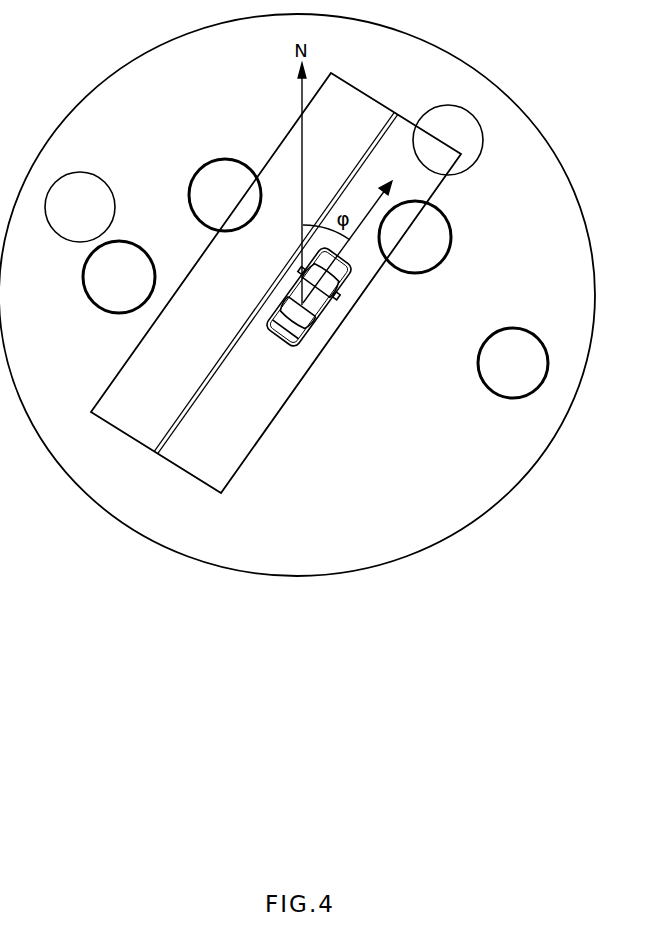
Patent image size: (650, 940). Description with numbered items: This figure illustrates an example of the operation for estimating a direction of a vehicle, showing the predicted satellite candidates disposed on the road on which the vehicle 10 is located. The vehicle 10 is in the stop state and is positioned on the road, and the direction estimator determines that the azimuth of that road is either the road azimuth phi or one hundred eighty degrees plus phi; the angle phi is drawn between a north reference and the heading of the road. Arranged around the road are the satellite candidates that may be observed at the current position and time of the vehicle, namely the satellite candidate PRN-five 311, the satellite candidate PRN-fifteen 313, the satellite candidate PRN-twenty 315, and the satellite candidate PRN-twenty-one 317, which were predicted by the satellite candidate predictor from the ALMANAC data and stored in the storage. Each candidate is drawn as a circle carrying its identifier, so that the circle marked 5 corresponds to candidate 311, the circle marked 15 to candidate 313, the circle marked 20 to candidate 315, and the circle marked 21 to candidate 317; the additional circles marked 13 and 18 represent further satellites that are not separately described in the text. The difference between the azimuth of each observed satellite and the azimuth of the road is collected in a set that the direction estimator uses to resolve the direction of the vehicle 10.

The vehicle 10 is at (322, 318).
The satellite candidate PRN-05 311 is at (513, 336).
The satellite candidate PRN-15 313 is at (225, 169).
The satellite candidate PRN-20 315 is at (452, 237).
The satellite candidate PRN-21 317 is at (85, 277).
The cell labeled 5 is at (513, 363).
The cell labeled 13 is at (448, 140).
The cell labeled 15 is at (225, 195).
The cell labeled 18 is at (80, 207).
The cell labeled 20 is at (415, 237).
The cell labeled 21 is at (119, 277).